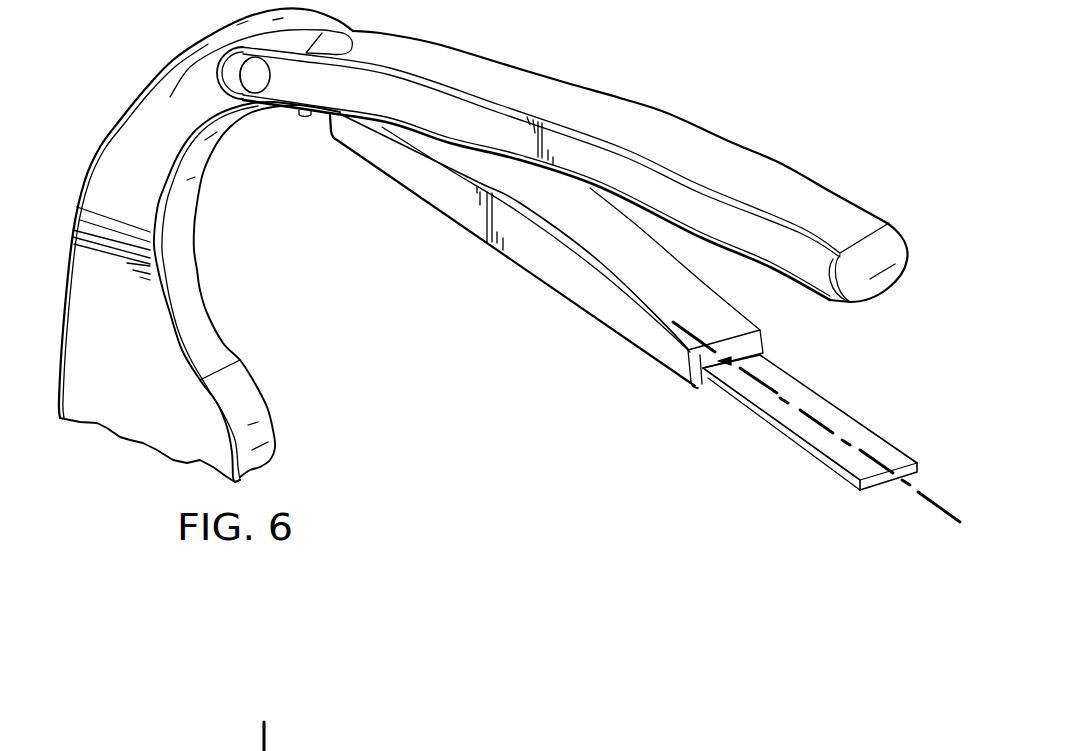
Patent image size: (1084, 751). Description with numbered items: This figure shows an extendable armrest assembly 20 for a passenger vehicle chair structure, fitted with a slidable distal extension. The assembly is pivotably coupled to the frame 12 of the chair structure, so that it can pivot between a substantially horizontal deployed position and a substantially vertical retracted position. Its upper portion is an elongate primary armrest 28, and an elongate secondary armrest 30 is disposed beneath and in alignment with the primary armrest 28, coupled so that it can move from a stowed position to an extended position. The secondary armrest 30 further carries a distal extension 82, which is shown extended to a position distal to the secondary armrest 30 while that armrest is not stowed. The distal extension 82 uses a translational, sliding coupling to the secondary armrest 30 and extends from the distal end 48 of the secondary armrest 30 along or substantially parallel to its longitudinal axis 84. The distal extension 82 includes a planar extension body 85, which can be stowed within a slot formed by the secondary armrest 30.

The frame 12 is at (97, 150).
The extendable armrest assembly 20 is at (757, 89).
The primary armrest 28 is at (600, 92).
The secondary armrest 30 is at (460, 224).
The distal end 48 is at (698, 401).
The distal extension 82 is at (862, 434).
The longitudinal axis 84 is at (940, 508).
The planar extension body 85 is at (813, 389).